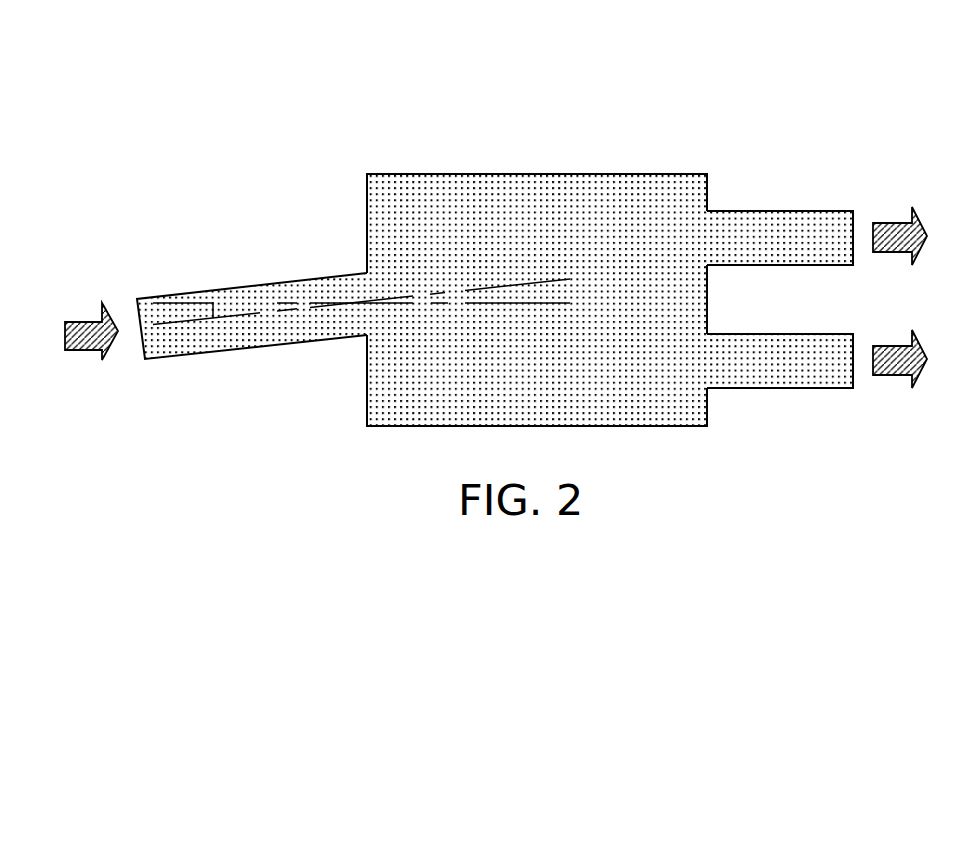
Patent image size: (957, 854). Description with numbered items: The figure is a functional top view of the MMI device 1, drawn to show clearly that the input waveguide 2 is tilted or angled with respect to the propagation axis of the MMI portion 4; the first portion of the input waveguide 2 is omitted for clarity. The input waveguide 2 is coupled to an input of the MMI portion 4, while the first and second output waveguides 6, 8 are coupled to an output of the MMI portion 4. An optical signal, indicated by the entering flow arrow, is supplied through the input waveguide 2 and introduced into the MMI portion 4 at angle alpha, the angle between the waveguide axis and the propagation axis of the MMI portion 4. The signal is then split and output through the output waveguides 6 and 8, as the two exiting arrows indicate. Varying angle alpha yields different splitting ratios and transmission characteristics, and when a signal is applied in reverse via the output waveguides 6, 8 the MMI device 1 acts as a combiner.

The MMI device 1 is at (496, 236).
The input waveguide 2 is at (268, 284).
The MMI portion 4 is at (522, 174).
The first output waveguide 6 is at (817, 372).
The second output waveguide 8 is at (790, 225).